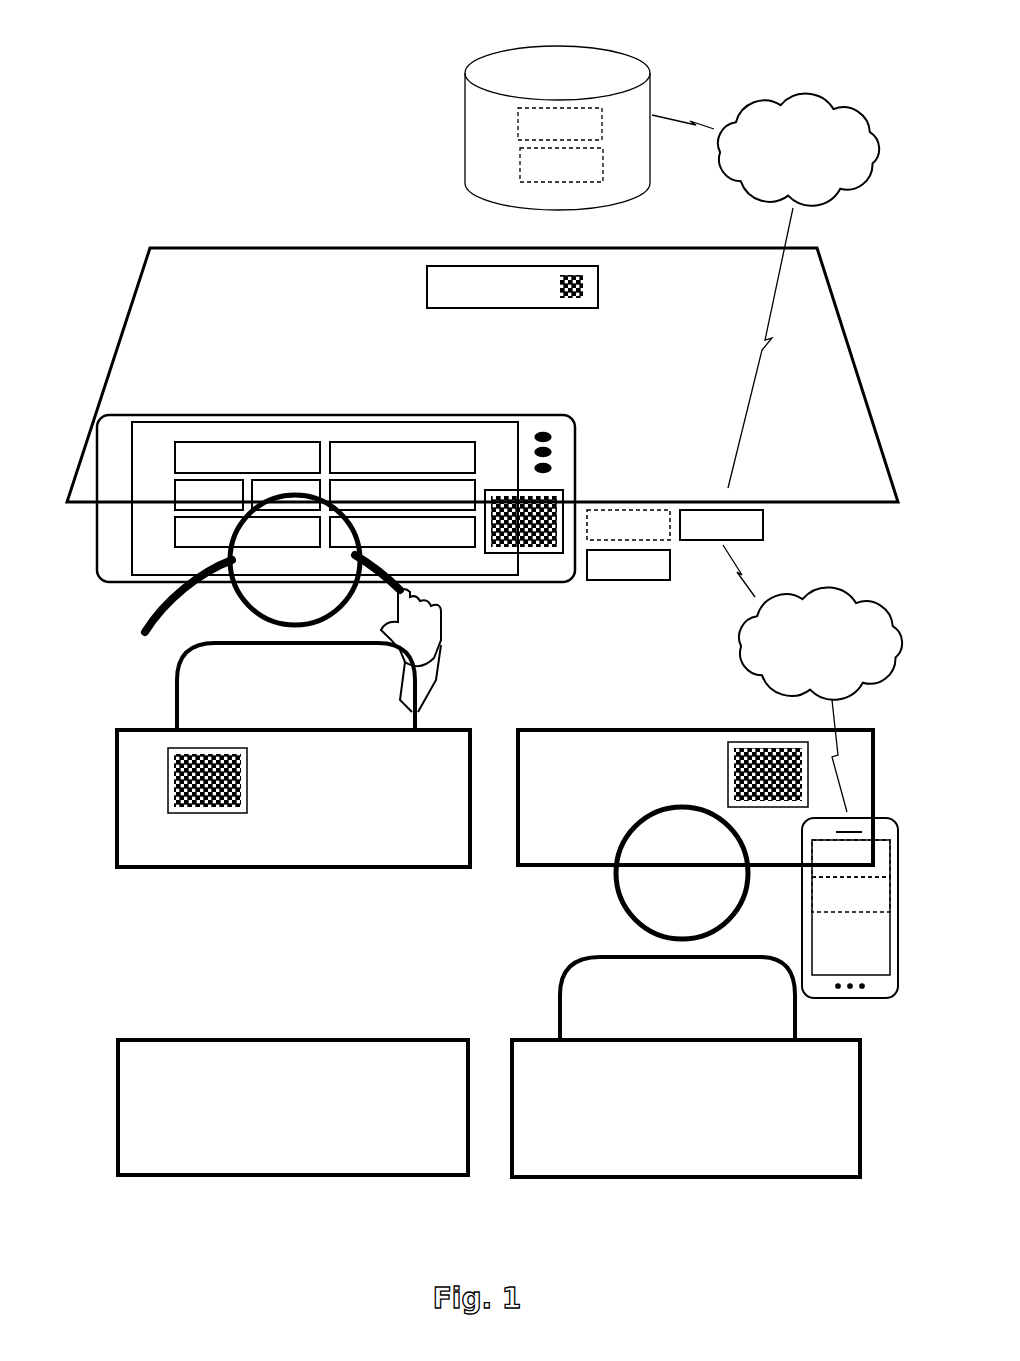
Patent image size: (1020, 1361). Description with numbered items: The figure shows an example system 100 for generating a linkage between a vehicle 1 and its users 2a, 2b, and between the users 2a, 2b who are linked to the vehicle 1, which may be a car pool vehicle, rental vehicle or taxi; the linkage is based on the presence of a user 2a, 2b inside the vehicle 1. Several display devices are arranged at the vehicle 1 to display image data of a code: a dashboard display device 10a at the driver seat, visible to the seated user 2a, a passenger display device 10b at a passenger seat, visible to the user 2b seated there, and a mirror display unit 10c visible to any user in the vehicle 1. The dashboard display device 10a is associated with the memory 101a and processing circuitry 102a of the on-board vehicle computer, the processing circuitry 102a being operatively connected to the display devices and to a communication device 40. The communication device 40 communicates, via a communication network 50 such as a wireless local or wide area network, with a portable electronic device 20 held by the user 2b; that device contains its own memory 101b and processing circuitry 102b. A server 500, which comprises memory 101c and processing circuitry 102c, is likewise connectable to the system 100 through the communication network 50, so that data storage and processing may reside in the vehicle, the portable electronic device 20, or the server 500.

The system 100 is at (106, 90).
The vehicle 1 is at (96, 283).
The server 500 is at (557, 128).
The memory 101c is at (560, 124).
The processing circuitry 102c is at (561, 165).
The communication network 50 is at (777, 453).
The mirror display unit 10c is at (512, 287).
The dashboard display device 10a is at (549, 562).
The memory 101a is at (628, 525).
The processing circuitry 102a is at (628, 565).
The communication device 40 is at (721, 525).
The user 2a is at (293, 835).
The user 2b is at (692, 953).
The passenger display device 10b is at (720, 766).
The memory 101b is at (851, 858).
The processing circuitry 102b is at (851, 894).
The portable electronic device 20 is at (850, 908).